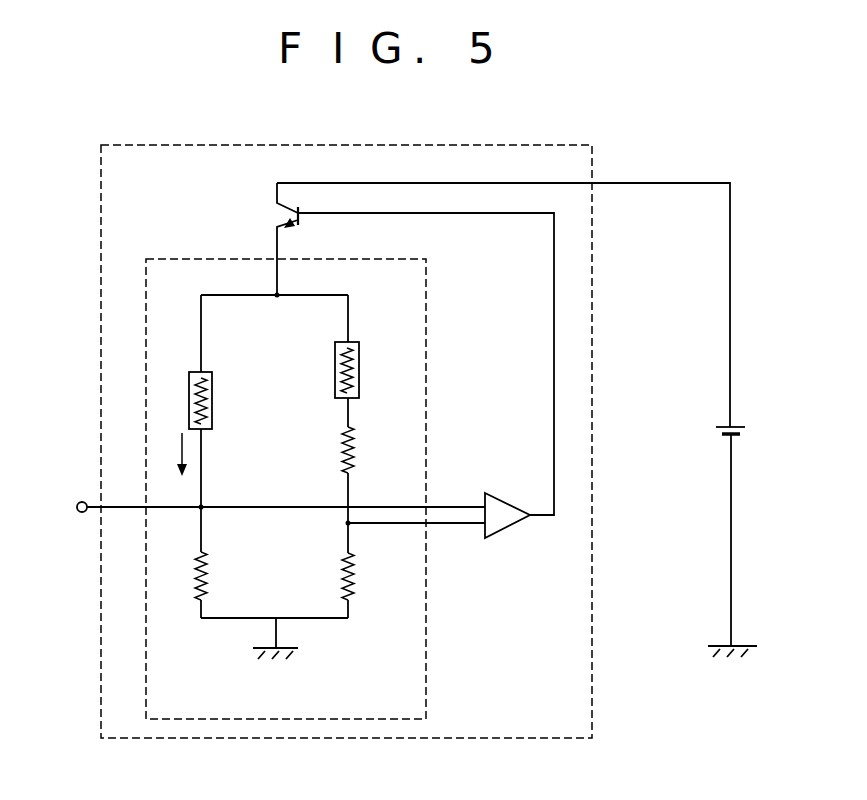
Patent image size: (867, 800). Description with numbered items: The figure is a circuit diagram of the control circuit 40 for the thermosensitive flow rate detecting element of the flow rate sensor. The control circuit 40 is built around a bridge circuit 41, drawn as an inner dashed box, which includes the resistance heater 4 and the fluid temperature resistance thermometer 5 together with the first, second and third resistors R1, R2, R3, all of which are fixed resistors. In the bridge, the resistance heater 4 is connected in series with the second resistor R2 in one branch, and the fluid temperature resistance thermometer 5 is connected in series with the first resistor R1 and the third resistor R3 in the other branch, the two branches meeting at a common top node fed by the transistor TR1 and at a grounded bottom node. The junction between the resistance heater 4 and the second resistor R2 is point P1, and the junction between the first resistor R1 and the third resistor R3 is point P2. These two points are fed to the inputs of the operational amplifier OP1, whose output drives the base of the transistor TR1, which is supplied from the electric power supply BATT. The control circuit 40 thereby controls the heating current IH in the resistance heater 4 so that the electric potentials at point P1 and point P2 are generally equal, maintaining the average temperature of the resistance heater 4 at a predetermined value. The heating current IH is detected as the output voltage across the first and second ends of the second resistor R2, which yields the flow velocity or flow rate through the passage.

The resistance heater 4 is at (217, 408).
The fluid temperature resistance thermometer 5 is at (363, 366).
The control circuit 40 is at (593, 689).
The bridge circuit 41 is at (428, 670).
The transistor TR1 is at (389, 349).
The operational amplifier OP1 is at (507, 526).
The first resistor R1 is at (358, 450).
The second resistor R2 is at (214, 583).
The third resistor R3 is at (358, 578).
The point P1 is at (207, 500).
The point P2 is at (340, 526).
The electric power supply BATT is at (684, 432).
The heating current IH is at (173, 454).